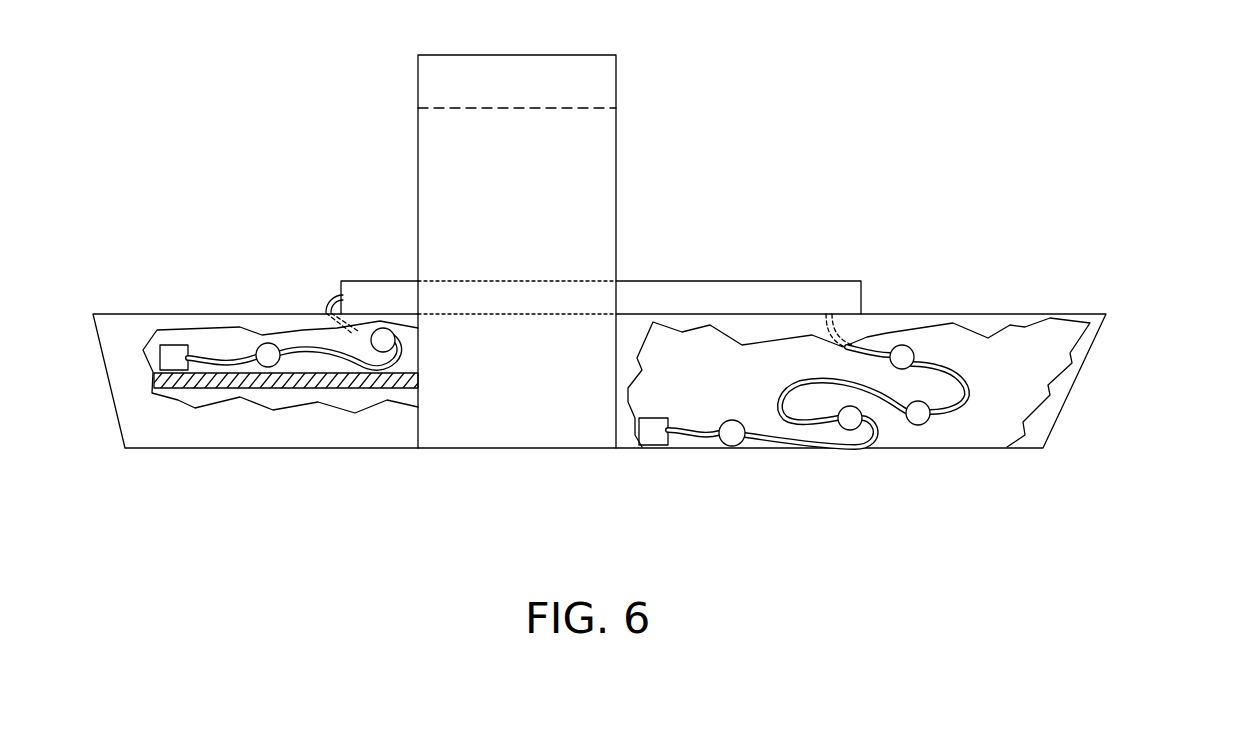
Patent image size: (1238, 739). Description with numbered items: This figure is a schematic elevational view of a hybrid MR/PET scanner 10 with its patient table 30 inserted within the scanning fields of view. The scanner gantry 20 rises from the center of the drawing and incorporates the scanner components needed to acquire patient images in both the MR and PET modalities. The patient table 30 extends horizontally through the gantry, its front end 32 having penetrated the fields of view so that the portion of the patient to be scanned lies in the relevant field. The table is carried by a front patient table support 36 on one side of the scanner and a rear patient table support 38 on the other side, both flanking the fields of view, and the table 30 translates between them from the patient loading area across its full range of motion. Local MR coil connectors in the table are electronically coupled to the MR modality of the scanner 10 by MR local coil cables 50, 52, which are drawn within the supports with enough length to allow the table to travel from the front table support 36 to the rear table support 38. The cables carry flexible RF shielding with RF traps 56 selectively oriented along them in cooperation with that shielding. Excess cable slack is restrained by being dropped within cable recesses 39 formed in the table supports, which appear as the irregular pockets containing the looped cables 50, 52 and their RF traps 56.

The hybrid MR/PET scanner 10 is at (280, 90).
The scanner gantry 20 is at (633, 118).
The patient table 30 is at (633, 233).
The front end 32 is at (713, 237).
The front patient table support 36 is at (1072, 413).
The rear patient table support 38 is at (240, 457).
The cable recesses 39 is at (163, 375).
The MR local coil cable 50 is at (300, 335).
The MR local coil cable 52 is at (735, 452).
The RF traps 56 is at (268, 343).